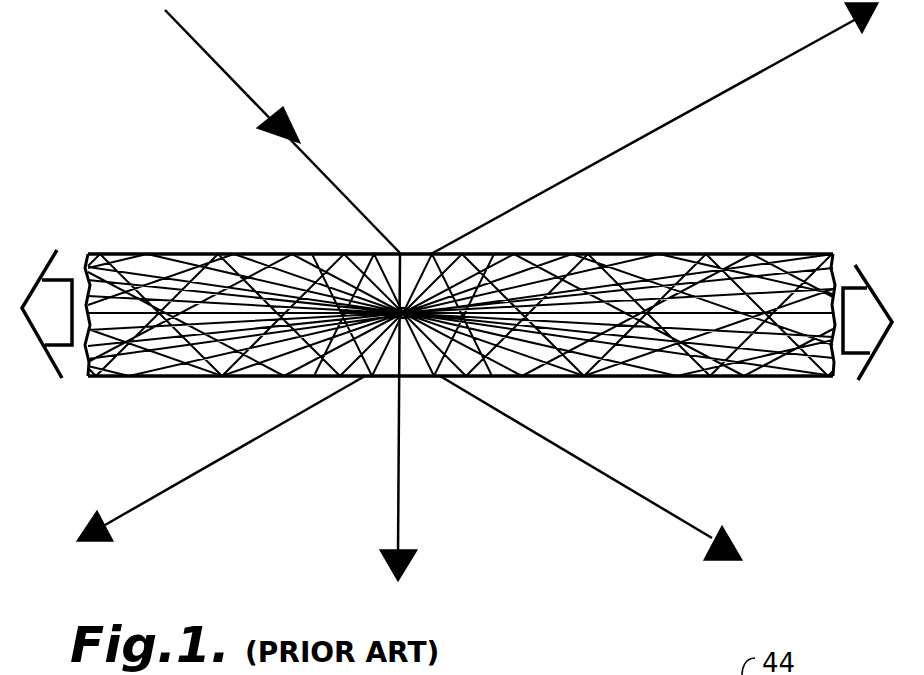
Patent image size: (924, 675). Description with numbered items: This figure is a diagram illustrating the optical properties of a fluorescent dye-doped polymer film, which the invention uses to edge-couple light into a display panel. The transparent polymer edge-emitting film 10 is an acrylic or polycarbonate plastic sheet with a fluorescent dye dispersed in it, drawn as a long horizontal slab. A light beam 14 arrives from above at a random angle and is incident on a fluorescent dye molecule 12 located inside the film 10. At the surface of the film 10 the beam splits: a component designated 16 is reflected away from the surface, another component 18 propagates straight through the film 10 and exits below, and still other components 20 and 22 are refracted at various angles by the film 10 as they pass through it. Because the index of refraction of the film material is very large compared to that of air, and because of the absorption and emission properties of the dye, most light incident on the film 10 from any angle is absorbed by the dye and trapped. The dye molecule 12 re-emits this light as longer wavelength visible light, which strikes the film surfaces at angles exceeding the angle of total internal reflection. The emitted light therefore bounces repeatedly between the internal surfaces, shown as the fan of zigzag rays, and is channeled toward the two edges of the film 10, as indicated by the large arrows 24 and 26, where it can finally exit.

The transparent polymer edge-emitting film 10 is at (650, 254).
The fluorescent dye molecule 12 is at (393, 258).
The light beam 14 is at (307, 147).
The reflected component of the light beam 16 is at (709, 98).
The propagating component of the light beam 18 is at (400, 520).
The refracted component of the light beam 20 is at (238, 455).
The refracted component of the light beam 22 is at (650, 503).
The edge-channeled emitted light 24 is at (47, 255).
The edge-channeled emitted light 26 is at (862, 275).